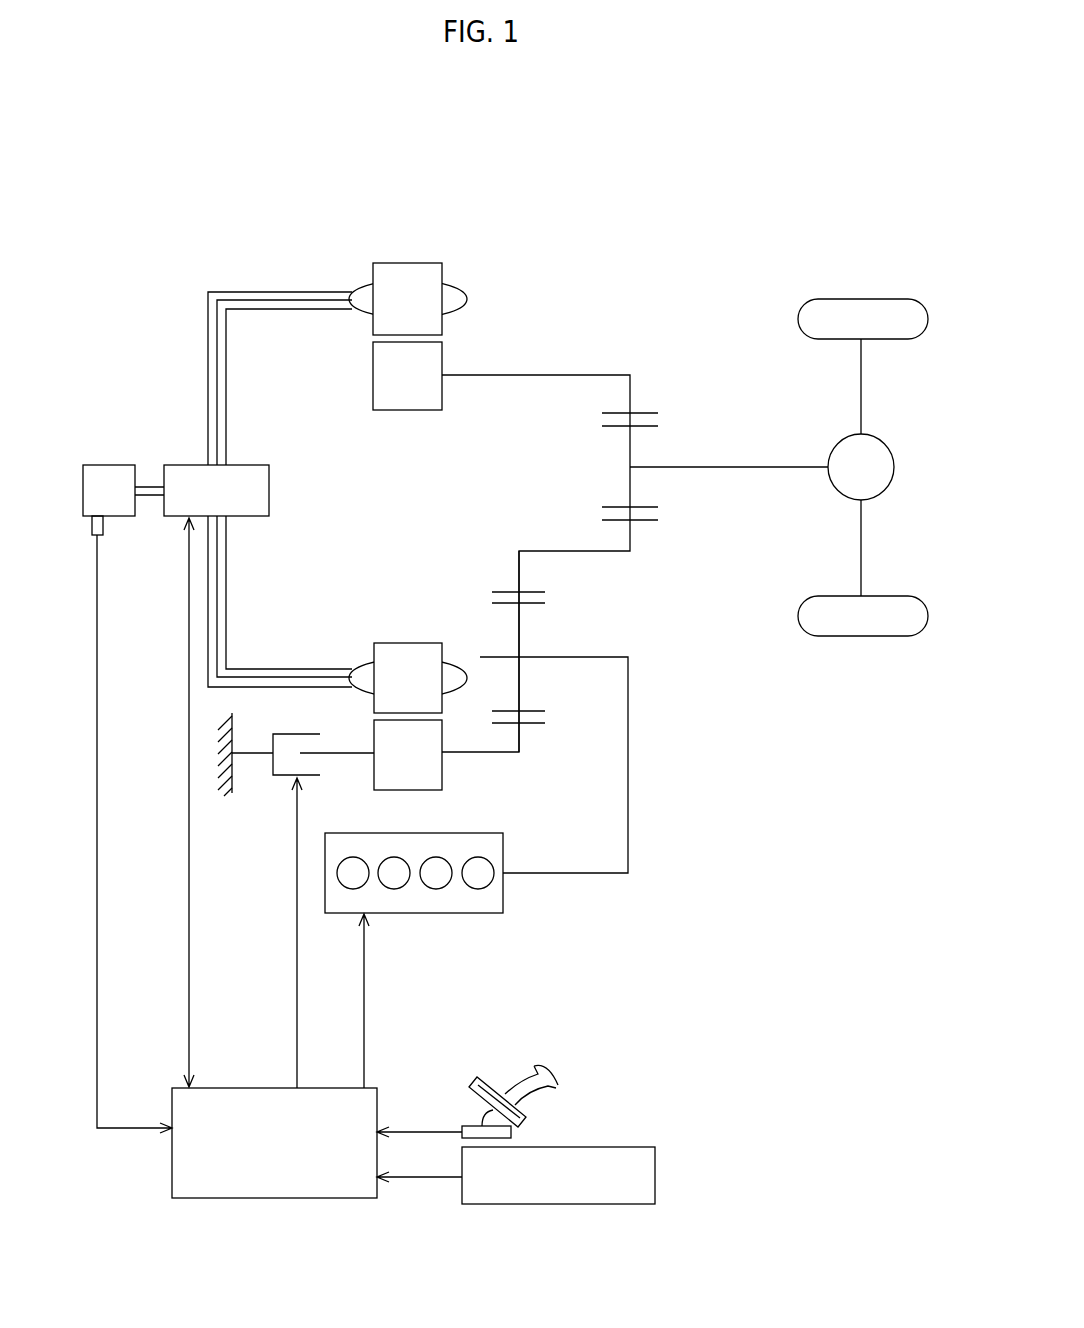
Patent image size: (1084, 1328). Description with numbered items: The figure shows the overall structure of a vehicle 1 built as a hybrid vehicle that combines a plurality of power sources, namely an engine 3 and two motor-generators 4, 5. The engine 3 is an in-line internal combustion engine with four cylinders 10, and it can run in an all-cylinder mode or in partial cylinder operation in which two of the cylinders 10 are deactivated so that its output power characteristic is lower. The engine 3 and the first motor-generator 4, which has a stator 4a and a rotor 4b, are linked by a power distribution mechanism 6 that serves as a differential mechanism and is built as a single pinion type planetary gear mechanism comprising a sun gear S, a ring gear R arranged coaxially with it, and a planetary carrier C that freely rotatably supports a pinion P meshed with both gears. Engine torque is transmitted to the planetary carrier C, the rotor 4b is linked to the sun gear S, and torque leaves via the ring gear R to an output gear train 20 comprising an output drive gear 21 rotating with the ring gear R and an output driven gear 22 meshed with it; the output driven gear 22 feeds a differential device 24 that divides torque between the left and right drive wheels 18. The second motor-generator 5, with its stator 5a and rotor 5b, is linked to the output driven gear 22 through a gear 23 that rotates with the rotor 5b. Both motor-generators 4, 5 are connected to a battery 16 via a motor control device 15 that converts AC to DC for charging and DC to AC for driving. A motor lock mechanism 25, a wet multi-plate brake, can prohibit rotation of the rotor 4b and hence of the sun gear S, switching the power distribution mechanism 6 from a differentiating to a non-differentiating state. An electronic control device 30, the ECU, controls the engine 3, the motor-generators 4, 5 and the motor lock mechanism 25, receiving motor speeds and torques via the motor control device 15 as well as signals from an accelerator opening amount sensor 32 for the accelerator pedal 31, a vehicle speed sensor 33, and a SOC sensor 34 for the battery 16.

The vehicle 1 is at (551, 155).
The engine 3 is at (484, 924).
The first motor-generator 4 is at (363, 637).
The stator 4a is at (415, 652).
The rotor 4b is at (440, 780).
The second motor-generator 5 is at (362, 246).
The stator 5a is at (412, 272).
The rotor 5b is at (385, 385).
The power distribution mechanism 6 is at (452, 568).
The cylinder 10 is at (436, 878).
The motor control device 15 is at (183, 465).
The battery 16 is at (108, 465).
The drive wheel 18 is at (846, 299).
The output gear train 20 is at (531, 478).
The output drive gear 21 is at (602, 520).
The output driven gear 22 is at (602, 507).
The gear 23 is at (648, 413).
The differential device 24 is at (834, 445).
The motor lock mechanism 25 is at (251, 776).
The electronic control device 30 is at (240, 1088).
The accelerator pedal 31 is at (470, 1080).
The accelerator opening amount sensor 32 is at (511, 1135).
The vehicle speed sensor 33 is at (655, 1177).
The SOC sensor 34 is at (103, 530).
The ring gear R is at (542, 590).
The pinion P is at (519, 632).
The planetary carrier C is at (628, 692).
The sun gear S is at (540, 723).